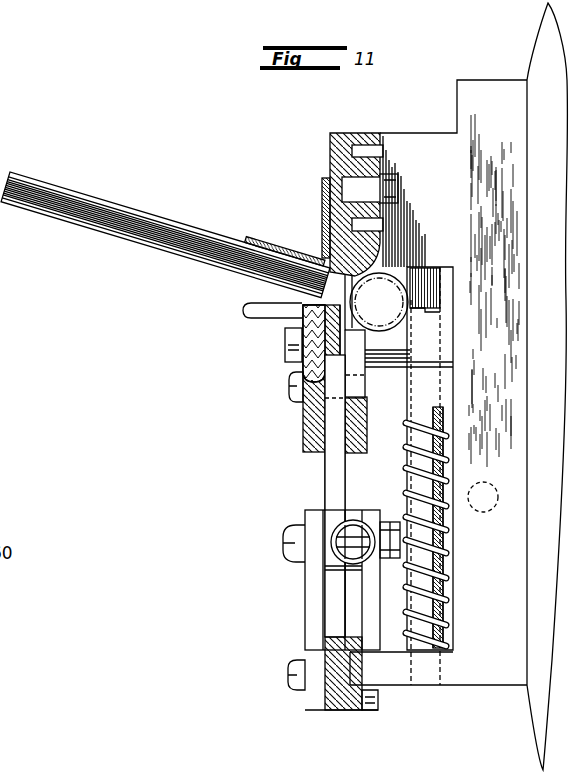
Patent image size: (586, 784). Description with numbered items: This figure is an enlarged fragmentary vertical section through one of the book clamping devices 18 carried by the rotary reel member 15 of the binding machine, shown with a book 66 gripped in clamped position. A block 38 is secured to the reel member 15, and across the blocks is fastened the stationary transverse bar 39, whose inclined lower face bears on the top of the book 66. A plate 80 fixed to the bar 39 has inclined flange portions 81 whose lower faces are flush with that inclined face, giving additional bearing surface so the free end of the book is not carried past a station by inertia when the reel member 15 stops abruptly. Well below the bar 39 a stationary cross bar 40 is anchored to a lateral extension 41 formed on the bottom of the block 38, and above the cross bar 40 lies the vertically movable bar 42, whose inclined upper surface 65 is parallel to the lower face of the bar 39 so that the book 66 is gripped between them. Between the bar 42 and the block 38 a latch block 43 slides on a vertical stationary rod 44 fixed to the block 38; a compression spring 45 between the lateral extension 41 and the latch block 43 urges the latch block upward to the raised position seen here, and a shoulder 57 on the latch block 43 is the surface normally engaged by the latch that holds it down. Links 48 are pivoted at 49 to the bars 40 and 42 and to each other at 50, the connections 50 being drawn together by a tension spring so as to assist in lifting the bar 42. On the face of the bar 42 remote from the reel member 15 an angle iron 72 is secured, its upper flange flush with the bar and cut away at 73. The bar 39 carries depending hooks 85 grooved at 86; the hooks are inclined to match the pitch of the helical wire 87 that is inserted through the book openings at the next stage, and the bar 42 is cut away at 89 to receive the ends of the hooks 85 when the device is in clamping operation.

The rotary reel member 15 is at (538, 51).
The block 38 is at (457, 94).
The transverse bar 39 is at (333, 132).
The book clamping device 18 is at (313, 170).
The plate 80 is at (323, 240).
The inclined flange portion 81 is at (268, 240).
The book 66 is at (166, 231).
The depending hook 85 is at (381, 262).
The helical wire 87 is at (405, 275).
The shoulder 57 is at (447, 312).
The latch block 43 is at (448, 337).
The inclined upper surface 65 is at (283, 298).
The cut-away 73 is at (248, 318).
The angle iron 72 is at (272, 320).
The groove 86 is at (355, 327).
The cut-away 89 is at (355, 362).
The pivotal connection 49 is at (292, 388).
The vertically movable bar 42 is at (315, 431).
The link 48 is at (325, 472).
The pivotal connection 50 is at (284, 554).
The vertical stationary rod 44 is at (443, 543).
The compression spring 45 is at (443, 578).
The lateral extension 41 is at (388, 678).
The stationary cross bar 40 is at (337, 705).